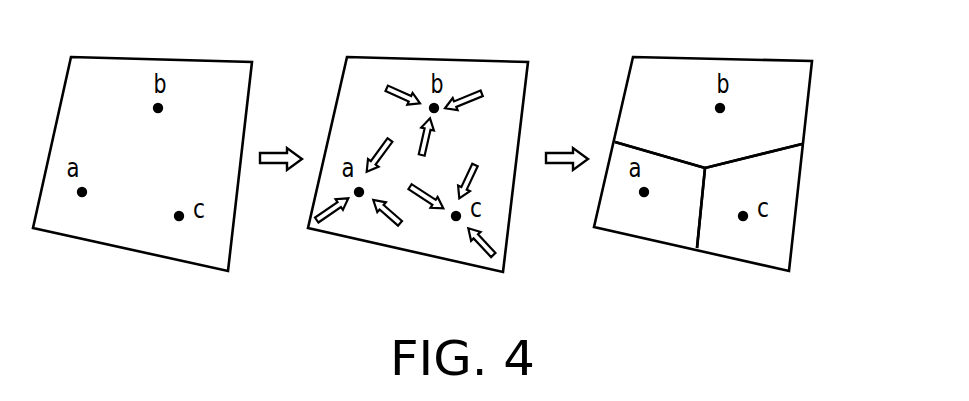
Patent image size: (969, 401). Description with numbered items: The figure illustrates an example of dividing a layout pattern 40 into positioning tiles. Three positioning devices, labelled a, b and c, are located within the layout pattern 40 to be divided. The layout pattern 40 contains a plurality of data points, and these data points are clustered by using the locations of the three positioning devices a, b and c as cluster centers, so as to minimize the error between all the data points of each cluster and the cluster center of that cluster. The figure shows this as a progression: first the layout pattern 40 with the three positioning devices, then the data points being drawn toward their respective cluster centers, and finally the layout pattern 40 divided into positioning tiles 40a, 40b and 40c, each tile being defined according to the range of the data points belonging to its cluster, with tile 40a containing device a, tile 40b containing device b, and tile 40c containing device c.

The layout pattern 40 is at (162, 57).
The positioning tile 40a is at (648, 228).
The positioning tile 40b is at (801, 106).
The positioning tile 40c is at (785, 205).